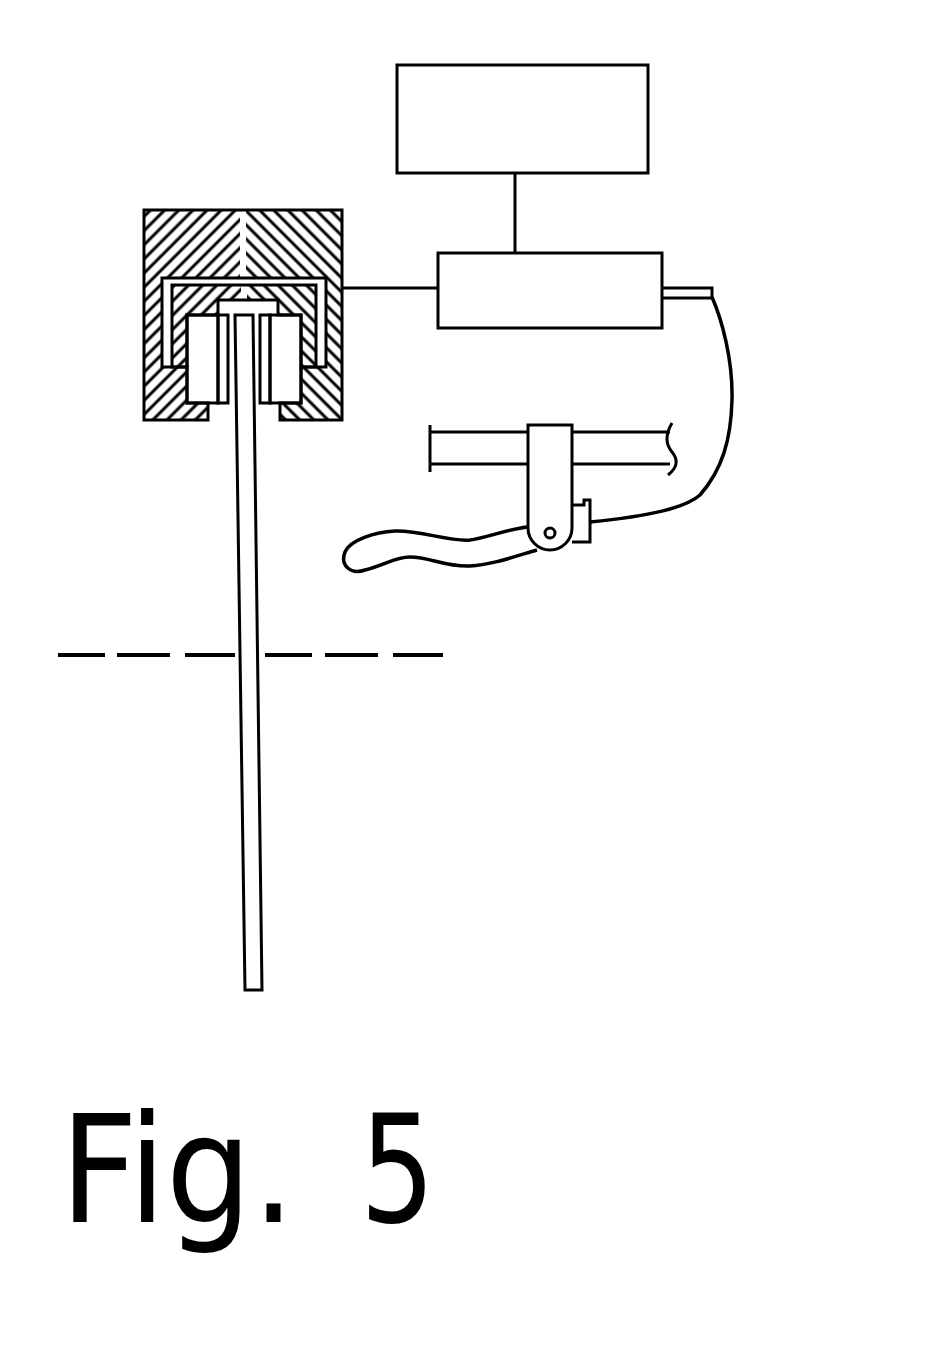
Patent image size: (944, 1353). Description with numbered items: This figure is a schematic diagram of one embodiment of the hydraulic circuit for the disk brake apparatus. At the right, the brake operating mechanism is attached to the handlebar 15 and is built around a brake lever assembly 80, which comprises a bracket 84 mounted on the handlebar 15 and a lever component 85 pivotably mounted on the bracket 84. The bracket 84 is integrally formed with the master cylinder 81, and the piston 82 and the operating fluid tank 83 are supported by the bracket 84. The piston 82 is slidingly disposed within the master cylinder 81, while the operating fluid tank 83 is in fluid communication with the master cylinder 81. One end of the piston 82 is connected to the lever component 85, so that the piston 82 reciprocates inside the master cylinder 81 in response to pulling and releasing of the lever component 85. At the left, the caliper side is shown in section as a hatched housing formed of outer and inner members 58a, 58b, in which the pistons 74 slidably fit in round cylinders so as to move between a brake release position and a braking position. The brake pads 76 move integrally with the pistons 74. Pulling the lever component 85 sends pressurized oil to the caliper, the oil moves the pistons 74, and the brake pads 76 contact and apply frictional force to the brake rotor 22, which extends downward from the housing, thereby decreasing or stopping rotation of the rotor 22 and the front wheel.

The handlebar 15 is at (480, 432).
The brake rotor 22 is at (262, 743).
The cylinder housing outer member 58a is at (148, 385).
The cylinder housing inner member (piston) 58b is at (316, 341).
The pistons 74 is at (192, 385).
The brake pads 76 is at (222, 403).
The brake lever assembly 80 is at (486, 529).
The master cylinder 81 is at (590, 253).
The piston 82 is at (672, 287).
The operating fluid tank 83 is at (552, 65).
The bracket 84 is at (527, 502).
The lever component 85 is at (437, 562).